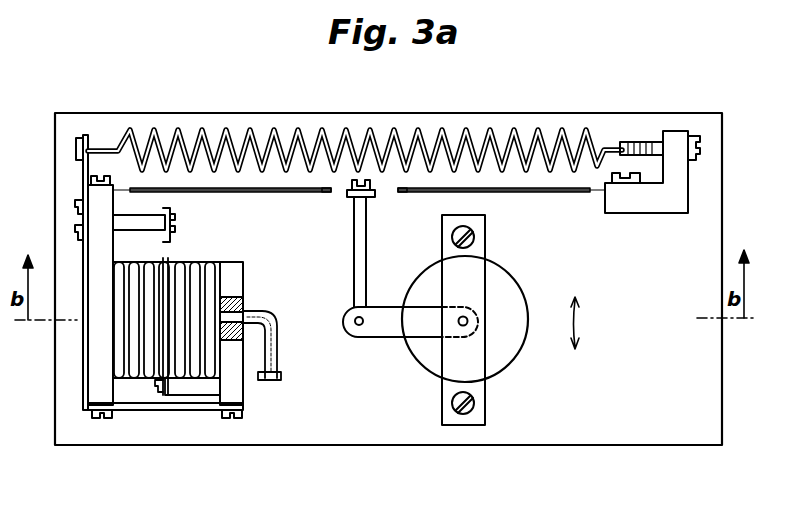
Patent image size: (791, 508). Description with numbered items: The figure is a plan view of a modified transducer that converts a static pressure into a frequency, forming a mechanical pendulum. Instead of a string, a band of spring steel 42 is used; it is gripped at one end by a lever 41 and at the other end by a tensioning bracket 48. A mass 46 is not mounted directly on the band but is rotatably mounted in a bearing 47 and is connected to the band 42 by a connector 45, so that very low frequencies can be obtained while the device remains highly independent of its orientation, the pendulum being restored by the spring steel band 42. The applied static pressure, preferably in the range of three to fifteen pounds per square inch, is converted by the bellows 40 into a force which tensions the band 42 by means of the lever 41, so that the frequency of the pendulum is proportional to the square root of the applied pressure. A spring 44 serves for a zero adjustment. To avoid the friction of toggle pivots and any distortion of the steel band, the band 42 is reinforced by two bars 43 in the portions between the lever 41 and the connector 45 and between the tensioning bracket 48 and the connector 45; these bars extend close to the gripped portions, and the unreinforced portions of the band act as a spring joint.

The bellows 40 is at (201, 262).
The lever 41 is at (100, 367).
The spring steel band 42 is at (335, 194).
The bars 43 is at (398, 190).
The spring 44 is at (533, 130).
The connector 45 is at (362, 237).
The mass 46 is at (500, 280).
The bearing 47 is at (467, 325).
The tensioning bracket 48 is at (640, 213).